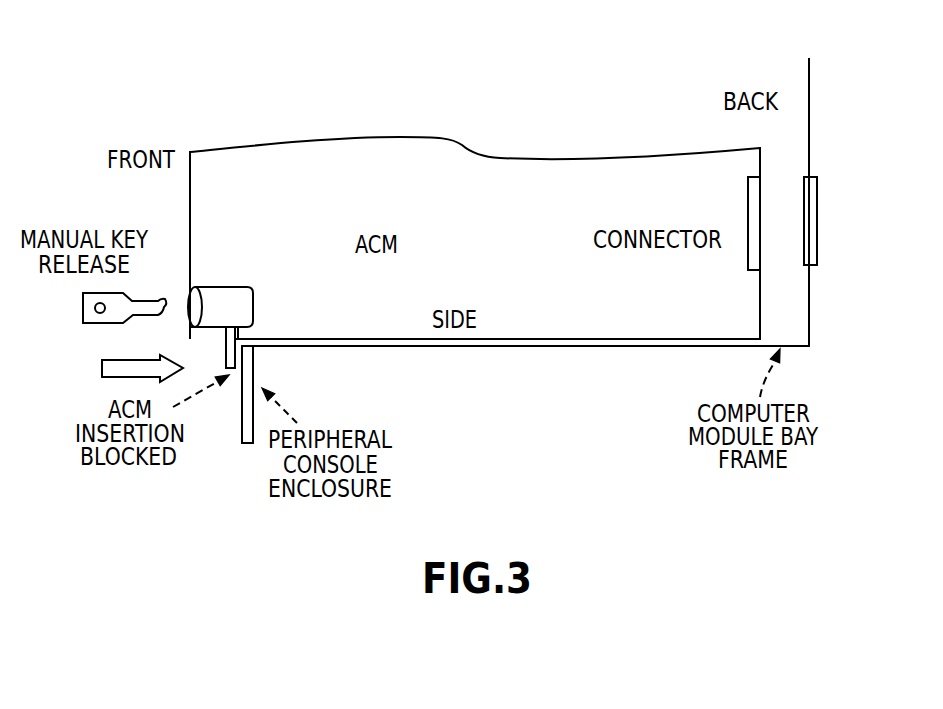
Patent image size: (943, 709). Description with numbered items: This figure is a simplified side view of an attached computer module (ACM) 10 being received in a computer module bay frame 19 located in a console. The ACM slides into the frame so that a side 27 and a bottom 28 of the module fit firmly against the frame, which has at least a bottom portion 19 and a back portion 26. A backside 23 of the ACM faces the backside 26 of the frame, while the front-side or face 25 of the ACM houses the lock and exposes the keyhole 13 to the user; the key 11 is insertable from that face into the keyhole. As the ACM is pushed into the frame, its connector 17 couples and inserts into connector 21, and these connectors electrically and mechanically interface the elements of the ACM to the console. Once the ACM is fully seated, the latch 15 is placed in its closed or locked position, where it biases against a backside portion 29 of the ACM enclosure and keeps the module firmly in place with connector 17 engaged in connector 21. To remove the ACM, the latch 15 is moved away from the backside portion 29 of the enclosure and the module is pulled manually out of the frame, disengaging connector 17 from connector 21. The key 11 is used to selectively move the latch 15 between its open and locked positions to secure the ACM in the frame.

The computer module bay system 10 is at (543, 85).
The key 11 is at (92, 323).
The keyhole 13 is at (192, 300).
The latch 15 is at (238, 338).
The connector 17 is at (757, 188).
The computer module bay frame 19 is at (628, 346).
The connector 21 is at (811, 222).
The backside of the ACM 23 is at (762, 308).
The front-side or face 25 is at (190, 152).
The back portion of the frame 26 is at (809, 98).
The side of the ACM 27 is at (492, 325).
The bottom side of ACM 28 is at (529, 338).
The backside portion of the ACM enclosure 29 is at (246, 385).